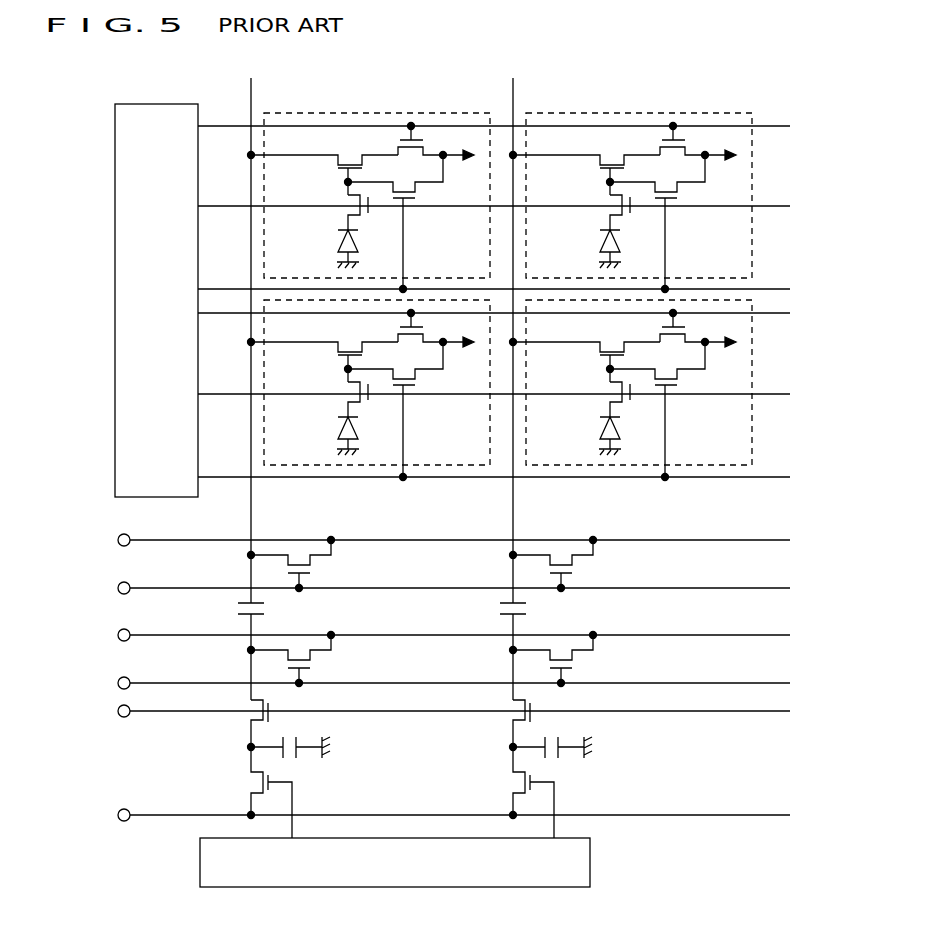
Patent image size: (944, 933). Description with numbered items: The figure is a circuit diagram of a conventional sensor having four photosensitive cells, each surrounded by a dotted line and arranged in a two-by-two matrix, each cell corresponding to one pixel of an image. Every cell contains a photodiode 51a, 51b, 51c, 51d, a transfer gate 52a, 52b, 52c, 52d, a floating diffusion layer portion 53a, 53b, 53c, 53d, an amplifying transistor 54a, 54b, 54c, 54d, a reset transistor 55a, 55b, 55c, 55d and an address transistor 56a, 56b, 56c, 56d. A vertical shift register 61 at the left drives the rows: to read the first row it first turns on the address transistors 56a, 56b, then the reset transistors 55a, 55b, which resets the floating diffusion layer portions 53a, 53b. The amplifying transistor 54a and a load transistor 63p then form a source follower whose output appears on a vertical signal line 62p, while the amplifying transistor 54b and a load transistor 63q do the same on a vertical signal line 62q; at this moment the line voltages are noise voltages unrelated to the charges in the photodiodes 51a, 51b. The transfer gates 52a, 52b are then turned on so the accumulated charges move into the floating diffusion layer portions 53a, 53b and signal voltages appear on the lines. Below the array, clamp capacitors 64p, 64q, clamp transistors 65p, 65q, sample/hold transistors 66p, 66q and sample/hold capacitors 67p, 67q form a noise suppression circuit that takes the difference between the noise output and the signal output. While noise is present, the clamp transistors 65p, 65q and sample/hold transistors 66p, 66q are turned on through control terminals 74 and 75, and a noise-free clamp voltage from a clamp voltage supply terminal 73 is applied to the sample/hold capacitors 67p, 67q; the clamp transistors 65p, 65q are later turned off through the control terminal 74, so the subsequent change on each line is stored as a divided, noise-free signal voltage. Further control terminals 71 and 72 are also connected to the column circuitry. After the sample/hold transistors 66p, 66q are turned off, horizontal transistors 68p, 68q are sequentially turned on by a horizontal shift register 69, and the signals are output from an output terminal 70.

The photodiode 51a is at (341, 256).
The photodiode 51b is at (603, 256).
The photodiode 51c is at (341, 443).
The photodiode 51d is at (603, 443).
The transfer gate 52a is at (348, 212).
The transfer gate 52b is at (610, 212).
The transfer gate 52c is at (348, 399).
The transfer gate 52d is at (610, 399).
The floating diffusion layer portion 53a is at (348, 189).
The floating diffusion layer portion 53b is at (610, 189).
The floating diffusion layer portion 53c is at (348, 376).
The floating diffusion layer portion 53d is at (610, 376).
The amplifying transistor 54a is at (338, 168).
The amplifying transistor 54b is at (600, 168).
The amplifying transistor 54c is at (338, 355).
The amplifying transistor 54d is at (600, 355).
The reset transistor 55a is at (418, 198).
The reset transistor 55b is at (680, 198).
The reset transistor 55c is at (418, 385).
The reset transistor 55d is at (680, 385).
The address transistor 56a is at (398, 140).
The address transistor 56b is at (660, 140).
The address transistor 56c is at (398, 327).
The address transistor 56d is at (660, 327).
The vertical shift register 61 is at (160, 104).
The vertical signal line 62p is at (251, 90).
The vertical signal line 62q is at (513, 90).
The load transistor 63p is at (312, 569).
The load transistor 63q is at (574, 569).
The clamp capacitor 64p is at (266, 608).
The clamp capacitor 64q is at (528, 608).
The clamp transistor 65p is at (312, 664).
The clamp transistor 65q is at (574, 664).
The sample/hold transistor 66p is at (248, 718).
The sample/hold transistor 66q is at (510, 718).
The sample/hold capacitor 67p is at (297, 759).
The sample/hold capacitor 67q is at (559, 759).
The horizontal transistor 68p is at (248, 784).
The horizontal transistor 68q is at (510, 784).
The horizontal shift register 69 is at (200, 862).
The output terminal 70 is at (118, 815).
The control terminal 71 is at (118, 540).
The control terminal 72 is at (118, 588).
The clamp voltage supply terminal 73 is at (118, 635).
The control terminal 74 is at (118, 683).
The control terminal 75 is at (118, 711).